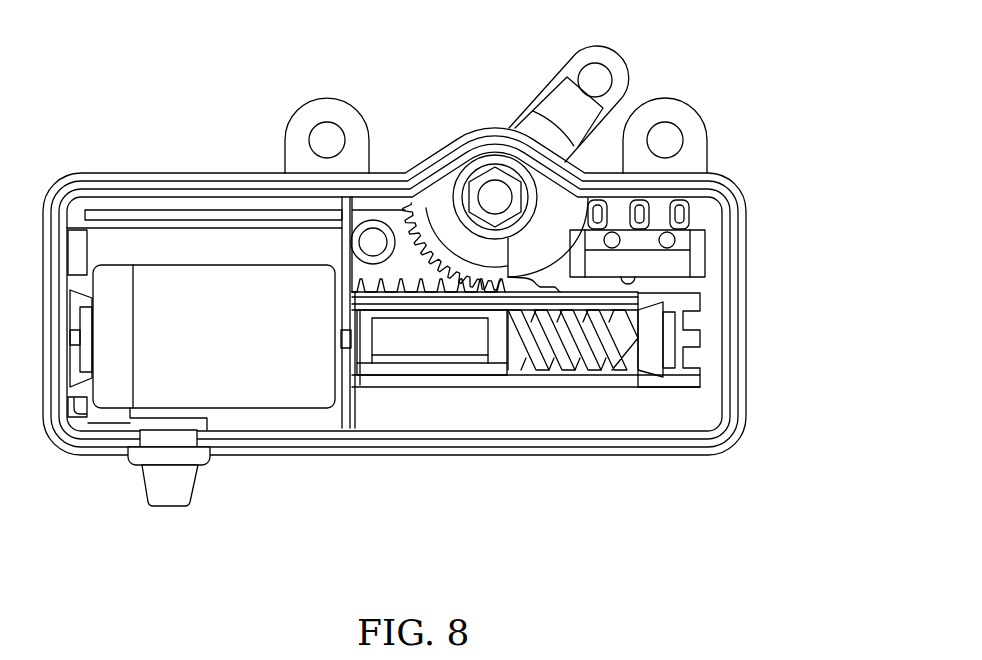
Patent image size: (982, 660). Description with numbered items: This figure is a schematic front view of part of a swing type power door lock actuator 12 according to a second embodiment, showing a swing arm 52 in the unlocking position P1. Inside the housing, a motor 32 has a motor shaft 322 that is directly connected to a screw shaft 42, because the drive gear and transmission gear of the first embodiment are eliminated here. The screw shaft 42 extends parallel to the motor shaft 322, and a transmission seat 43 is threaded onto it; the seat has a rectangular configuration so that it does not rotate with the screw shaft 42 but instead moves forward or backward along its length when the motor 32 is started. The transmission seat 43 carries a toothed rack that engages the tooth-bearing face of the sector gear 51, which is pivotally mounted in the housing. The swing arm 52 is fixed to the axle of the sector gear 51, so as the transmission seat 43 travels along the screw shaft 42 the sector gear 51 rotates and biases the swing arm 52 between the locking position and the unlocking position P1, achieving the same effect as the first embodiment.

The swing type power door lock actuator 12 is at (783, 63).
The unlocking position P1 is at (650, 88).
The motor 32 is at (272, 383).
The motor shaft 322 is at (347, 340).
The screw shaft 42 is at (590, 333).
The transmission seat 43 is at (442, 340).
The sector gear 51 is at (443, 217).
The swing arm 52 is at (556, 80).